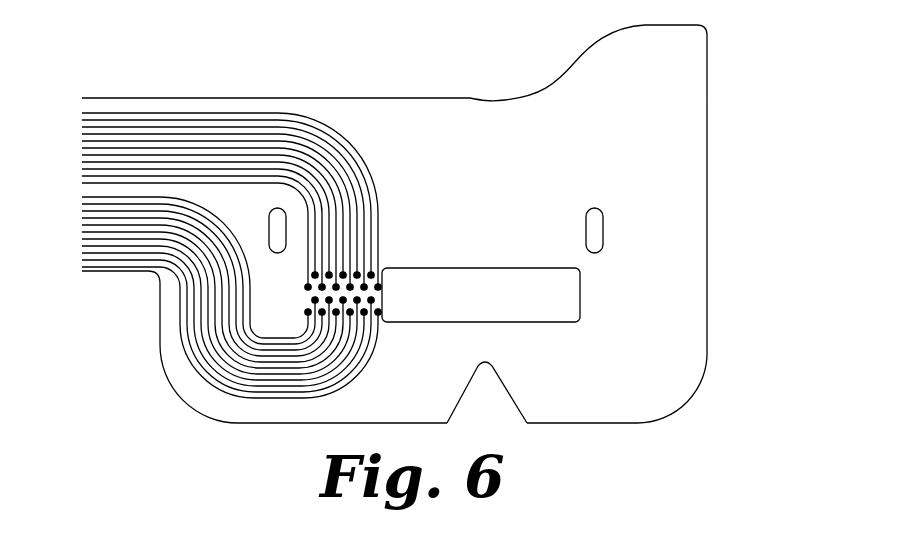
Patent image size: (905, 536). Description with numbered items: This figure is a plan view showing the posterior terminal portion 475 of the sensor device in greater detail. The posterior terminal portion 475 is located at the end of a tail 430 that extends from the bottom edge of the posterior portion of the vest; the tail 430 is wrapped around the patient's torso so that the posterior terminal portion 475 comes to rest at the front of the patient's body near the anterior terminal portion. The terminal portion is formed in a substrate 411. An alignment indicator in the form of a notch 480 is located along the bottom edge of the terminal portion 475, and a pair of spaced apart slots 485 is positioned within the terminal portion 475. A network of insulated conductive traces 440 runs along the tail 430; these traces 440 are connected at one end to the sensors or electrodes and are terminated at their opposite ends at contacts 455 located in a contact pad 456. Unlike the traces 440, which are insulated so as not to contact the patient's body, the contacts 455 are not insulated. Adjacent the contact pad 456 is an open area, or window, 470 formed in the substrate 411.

The substrate 411 is at (708, 70).
The tail 430 is at (90, 276).
The conductive traces 440 is at (334, 121).
The contacts 455 is at (310, 320).
The contact pad 456 is at (297, 311).
The open area or window 470 is at (581, 285).
The posterior terminal portion 475 is at (169, 398).
The notch 480 is at (512, 400).
The slots 485 is at (268, 225).